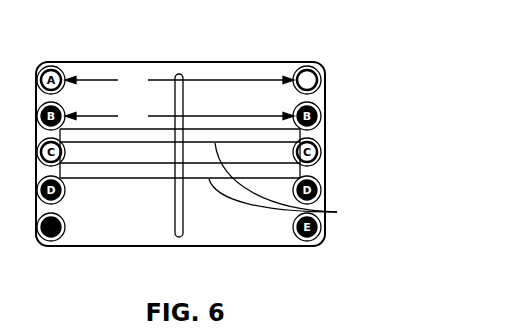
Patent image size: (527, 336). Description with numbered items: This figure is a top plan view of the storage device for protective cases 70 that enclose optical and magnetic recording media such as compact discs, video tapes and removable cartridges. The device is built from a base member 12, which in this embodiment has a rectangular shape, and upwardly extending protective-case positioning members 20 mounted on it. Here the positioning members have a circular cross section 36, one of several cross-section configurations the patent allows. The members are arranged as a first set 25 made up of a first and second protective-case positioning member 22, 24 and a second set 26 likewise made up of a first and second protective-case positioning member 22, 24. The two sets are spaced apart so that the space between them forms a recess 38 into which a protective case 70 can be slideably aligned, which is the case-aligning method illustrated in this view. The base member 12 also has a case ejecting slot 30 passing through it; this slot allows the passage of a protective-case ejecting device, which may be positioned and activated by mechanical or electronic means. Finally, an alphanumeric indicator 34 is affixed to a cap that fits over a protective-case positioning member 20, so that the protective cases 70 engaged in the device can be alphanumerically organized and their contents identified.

The base member 12 is at (171, 66).
The case ejecting slot 30 is at (183, 78).
The protective-case positioning member 20 is at (214, 152).
The first protective-case positioning member 22 is at (56, 241).
The second protective-case positioning member 24 is at (311, 66).
The circular cross section 36 is at (214, 152).
The alphanumeric indicator 34 is at (321, 83).
The recess 38 is at (46, 130).
The first set of protective-case positioning members 25 is at (179, 80).
The second set of protective-case positioning members 26 is at (179, 116).
The protective case 70 is at (286, 183).